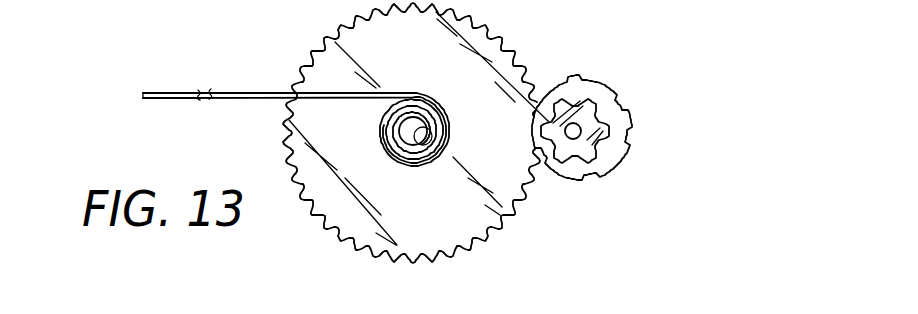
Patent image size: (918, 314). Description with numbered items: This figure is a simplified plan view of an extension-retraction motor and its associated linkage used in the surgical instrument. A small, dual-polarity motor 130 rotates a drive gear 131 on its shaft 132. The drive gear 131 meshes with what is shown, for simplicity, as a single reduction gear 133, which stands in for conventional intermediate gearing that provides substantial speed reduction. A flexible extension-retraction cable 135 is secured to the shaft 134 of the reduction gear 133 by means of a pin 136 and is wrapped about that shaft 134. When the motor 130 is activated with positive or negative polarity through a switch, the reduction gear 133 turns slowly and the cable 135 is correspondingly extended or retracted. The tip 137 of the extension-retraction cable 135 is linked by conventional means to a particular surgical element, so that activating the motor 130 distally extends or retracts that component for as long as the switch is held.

The dual-polarity motor 130 is at (615, 95).
The drive gear 131 is at (628, 138).
The shaft 132 is at (578, 136).
The reduction gear 133 is at (446, 83).
The shaft 134 is at (405, 142).
The extension-retraction cable 135 is at (222, 105).
The pin 136 is at (449, 141).
The tip 137 is at (130, 95).